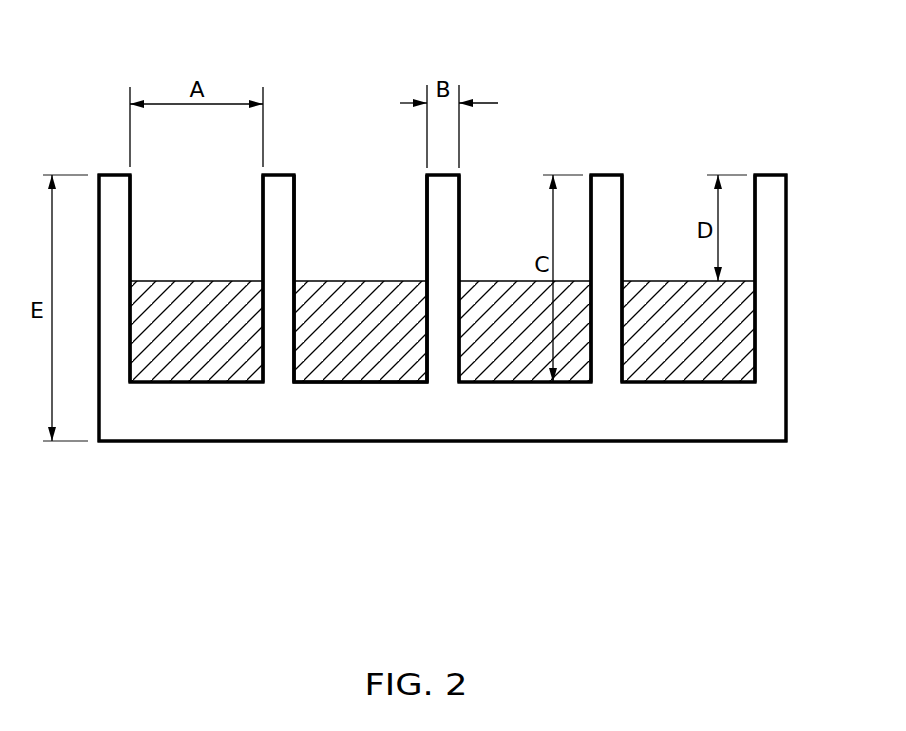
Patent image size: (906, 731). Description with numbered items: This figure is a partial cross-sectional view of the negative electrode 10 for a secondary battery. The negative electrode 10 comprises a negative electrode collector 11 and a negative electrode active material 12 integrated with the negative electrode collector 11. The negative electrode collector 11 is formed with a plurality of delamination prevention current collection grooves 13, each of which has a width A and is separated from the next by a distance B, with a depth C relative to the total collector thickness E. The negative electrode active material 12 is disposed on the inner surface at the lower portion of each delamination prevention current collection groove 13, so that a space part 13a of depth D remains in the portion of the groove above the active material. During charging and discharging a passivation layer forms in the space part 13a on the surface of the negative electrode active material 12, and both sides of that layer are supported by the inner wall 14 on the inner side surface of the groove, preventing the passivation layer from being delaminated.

The negative electrode 10 is at (613, 76).
The negative electrode collector 11 is at (155, 444).
The negative electrode active material 12 is at (362, 352).
The delamination prevention current collection groove 13 is at (371, 180).
The space part 13a is at (333, 220).
The inner wall 14 is at (274, 177).